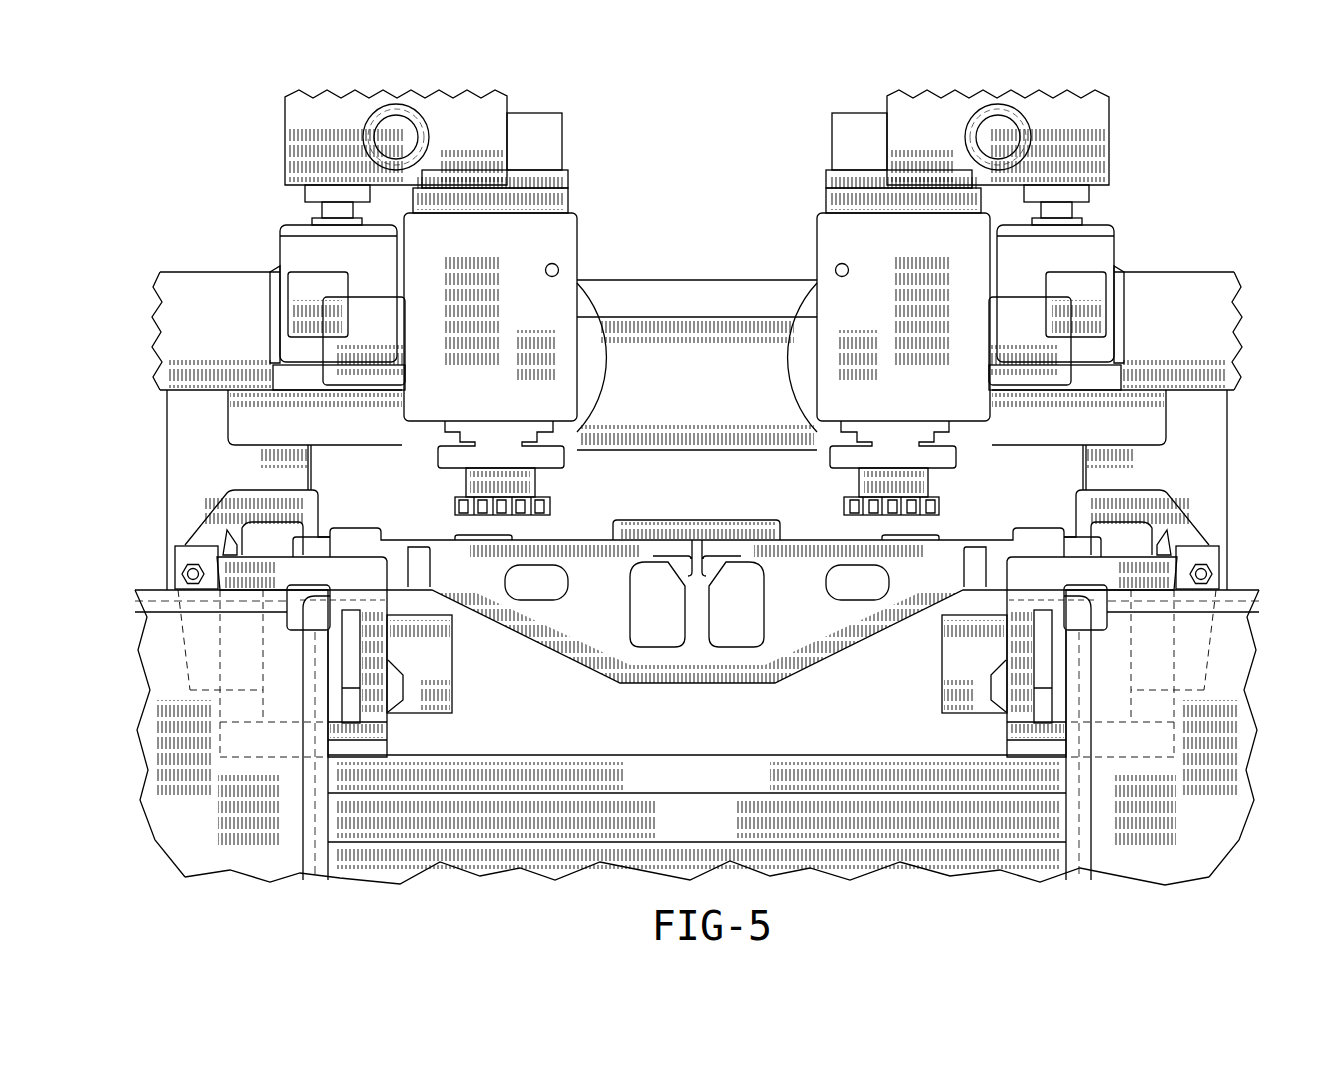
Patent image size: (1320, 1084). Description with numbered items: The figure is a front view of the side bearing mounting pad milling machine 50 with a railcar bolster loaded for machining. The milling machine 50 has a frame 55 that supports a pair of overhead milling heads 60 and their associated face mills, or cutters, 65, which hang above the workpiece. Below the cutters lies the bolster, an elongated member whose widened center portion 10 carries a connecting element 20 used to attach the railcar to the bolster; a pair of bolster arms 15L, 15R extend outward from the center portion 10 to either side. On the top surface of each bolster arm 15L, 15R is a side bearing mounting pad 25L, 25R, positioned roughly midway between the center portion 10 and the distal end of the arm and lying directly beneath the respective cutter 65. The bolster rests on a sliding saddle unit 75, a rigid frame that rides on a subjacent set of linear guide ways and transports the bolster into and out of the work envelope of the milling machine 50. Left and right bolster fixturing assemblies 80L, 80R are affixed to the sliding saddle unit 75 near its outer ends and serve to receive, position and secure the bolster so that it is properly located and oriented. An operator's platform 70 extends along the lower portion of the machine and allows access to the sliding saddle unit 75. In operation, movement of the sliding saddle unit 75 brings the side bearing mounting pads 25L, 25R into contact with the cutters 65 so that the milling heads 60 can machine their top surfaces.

The side bearing mounting pad milling machine 50 is at (192, 210).
The frame 55 is at (1157, 288).
The overhead milling heads 60 is at (509, 326).
The face mills 65 is at (550, 496).
The connecting element 20 is at (703, 520).
The center portion 10 is at (685, 684).
The side bearing mounting pad 25L is at (457, 538).
The side bearing mounting pad 25R is at (937, 538).
The bolster arm 15L is at (357, 527).
The bolster arm 15R is at (1037, 527).
The bolster fixturing assembly 80L is at (210, 495).
The bolster fixturing assembly 80R is at (1184, 495).
The sliding saddle unit 75 is at (470, 691).
The operator's platform 70 is at (824, 755).